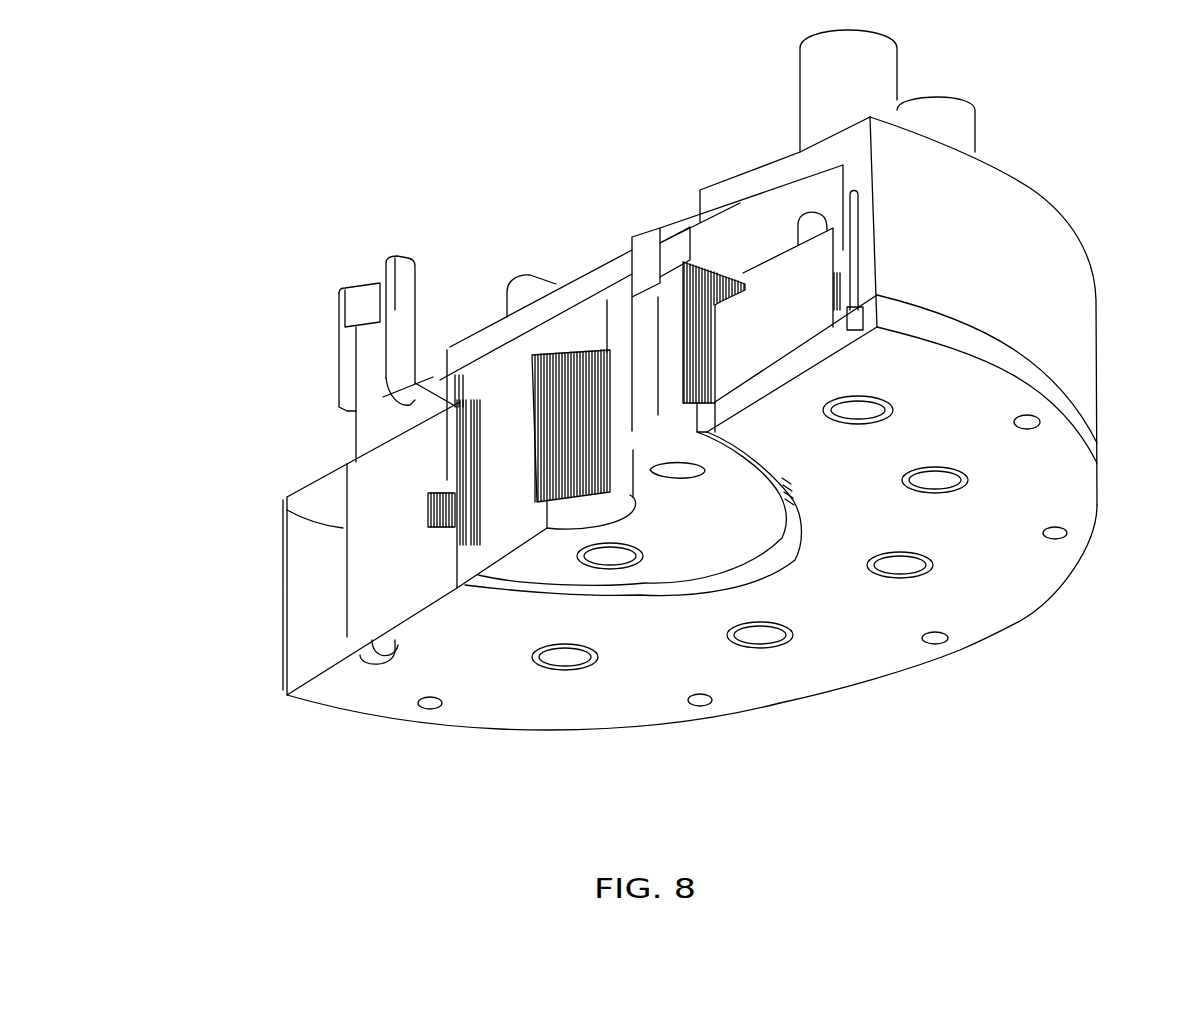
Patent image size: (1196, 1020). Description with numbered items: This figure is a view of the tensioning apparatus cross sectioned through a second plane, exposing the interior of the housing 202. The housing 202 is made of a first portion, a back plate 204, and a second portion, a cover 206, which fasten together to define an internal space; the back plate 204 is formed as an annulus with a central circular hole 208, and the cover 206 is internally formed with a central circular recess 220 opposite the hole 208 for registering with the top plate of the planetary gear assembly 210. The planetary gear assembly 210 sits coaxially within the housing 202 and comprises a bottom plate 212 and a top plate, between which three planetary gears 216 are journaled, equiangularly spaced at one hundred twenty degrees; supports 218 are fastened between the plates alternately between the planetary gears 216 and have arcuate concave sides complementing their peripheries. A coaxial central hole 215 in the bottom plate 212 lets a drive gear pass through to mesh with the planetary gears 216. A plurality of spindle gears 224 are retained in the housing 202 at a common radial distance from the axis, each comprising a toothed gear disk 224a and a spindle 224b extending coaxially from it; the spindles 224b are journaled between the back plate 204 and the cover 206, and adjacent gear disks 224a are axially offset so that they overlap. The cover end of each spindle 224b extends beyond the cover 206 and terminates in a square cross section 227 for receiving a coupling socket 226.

The housing 202 is at (1062, 277).
The back plate 204 is at (990, 597).
The cover 206 is at (1002, 197).
The central circular hole 208 is at (787, 513).
The planetary gear assembly 210 is at (522, 387).
The bottom plate 212 is at (587, 578).
The central hole 215 is at (595, 517).
The planetary gears 216 is at (717, 262).
The supports 218 is at (497, 437).
The central circular recess 220 is at (602, 280).
The spindle gears 224 is at (318, 562).
The gear disk 224a is at (305, 620).
The spindle 224b is at (368, 418).
The coupling socket 226 is at (377, 302).
The square cross section 227 is at (373, 365).